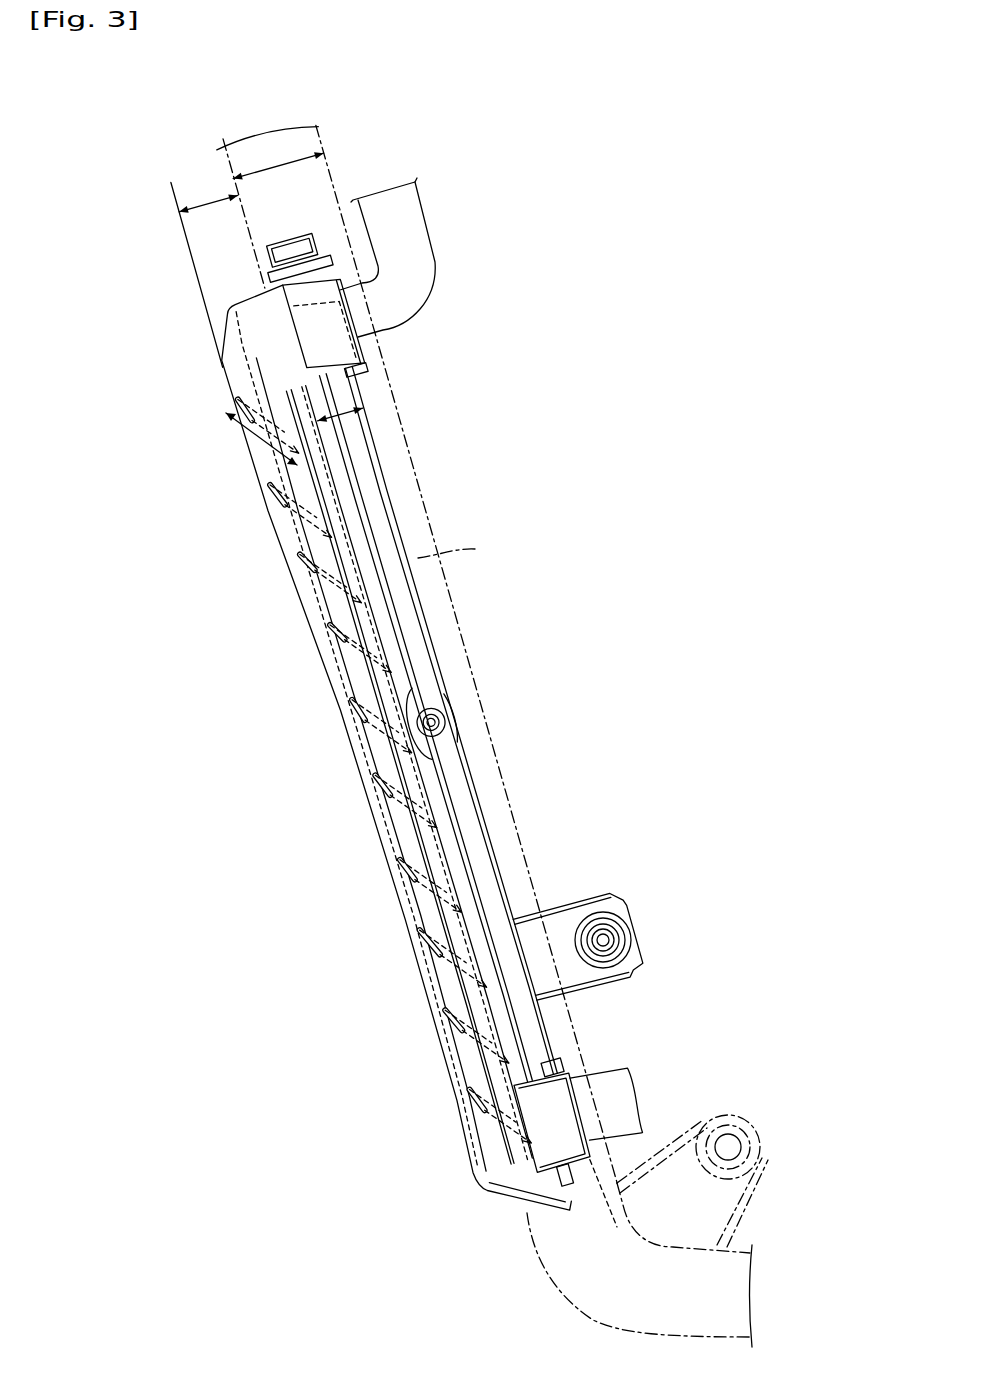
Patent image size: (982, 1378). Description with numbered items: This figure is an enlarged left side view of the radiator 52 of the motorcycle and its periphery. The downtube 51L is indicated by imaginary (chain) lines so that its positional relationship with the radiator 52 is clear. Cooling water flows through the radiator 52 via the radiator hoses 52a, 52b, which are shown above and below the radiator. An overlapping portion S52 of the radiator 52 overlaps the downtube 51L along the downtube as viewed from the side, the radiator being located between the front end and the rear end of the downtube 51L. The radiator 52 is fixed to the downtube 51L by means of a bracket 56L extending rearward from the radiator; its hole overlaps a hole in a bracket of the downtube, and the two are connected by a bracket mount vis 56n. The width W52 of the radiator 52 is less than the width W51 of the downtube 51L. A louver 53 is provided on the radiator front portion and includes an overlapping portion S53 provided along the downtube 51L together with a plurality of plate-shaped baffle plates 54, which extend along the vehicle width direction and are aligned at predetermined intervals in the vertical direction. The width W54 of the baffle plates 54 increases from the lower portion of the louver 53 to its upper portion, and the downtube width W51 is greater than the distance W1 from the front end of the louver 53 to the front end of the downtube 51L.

The downtube 51L is at (305, 187).
The width of downtube W51 is at (278, 160).
The distance to the front end of downtube from a front end of louver W1 is at (226, 266).
The width of radiator W52 is at (352, 400).
The width of baffle plates W54 is at (262, 441).
The radiator 52 is at (385, 507).
The radiator hose 52a is at (428, 275).
The radiator hose 52b is at (620, 1098).
The louver 53 is at (300, 550).
The baffle plates 54 is at (258, 495).
The overlapping portion of radiator S52 is at (470, 547).
The overlapping portion of louver S53 is at (420, 660).
The bracket 56L is at (630, 905).
The bracket mount vis 56n is at (612, 938).